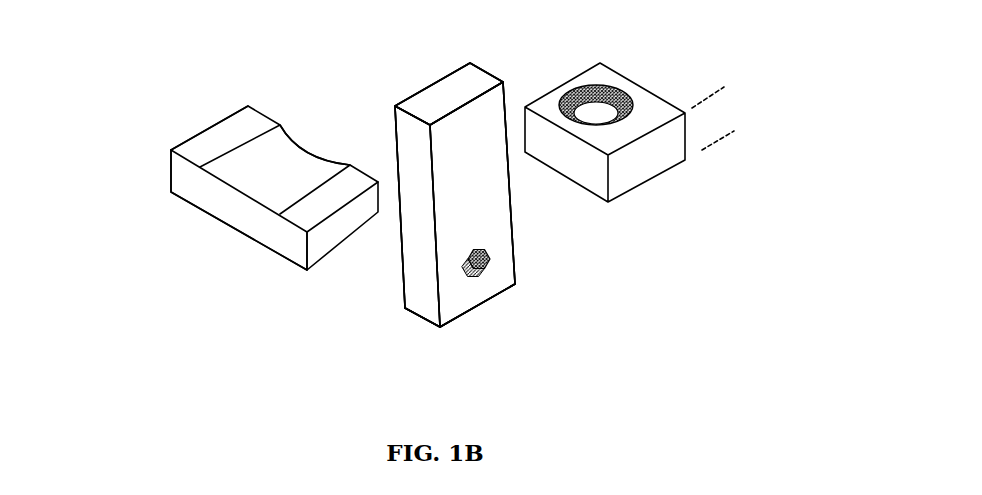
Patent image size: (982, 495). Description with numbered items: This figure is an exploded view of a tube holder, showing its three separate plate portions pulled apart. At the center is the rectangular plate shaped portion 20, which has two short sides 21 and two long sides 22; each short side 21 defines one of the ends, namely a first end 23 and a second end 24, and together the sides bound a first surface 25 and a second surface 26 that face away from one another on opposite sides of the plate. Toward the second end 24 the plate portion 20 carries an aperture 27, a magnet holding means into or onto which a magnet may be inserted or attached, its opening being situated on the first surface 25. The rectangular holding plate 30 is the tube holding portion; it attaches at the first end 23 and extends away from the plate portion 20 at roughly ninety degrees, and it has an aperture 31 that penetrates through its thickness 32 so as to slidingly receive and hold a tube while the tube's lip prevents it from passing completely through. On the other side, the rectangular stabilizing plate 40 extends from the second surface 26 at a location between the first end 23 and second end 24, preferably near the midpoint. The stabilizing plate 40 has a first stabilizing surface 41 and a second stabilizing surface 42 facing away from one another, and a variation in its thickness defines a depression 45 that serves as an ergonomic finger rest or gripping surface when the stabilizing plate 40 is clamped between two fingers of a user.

The rectangular plate shaped portion 20 is at (435, 67).
The short sides 21 is at (427, 88).
The long sides 22 is at (515, 252).
The first end 23 is at (470, 82).
The second end 24 is at (458, 315).
The first surface 25 is at (485, 203).
The second surface 26 is at (400, 253).
The aperture 27 is at (486, 268).
The rectangular holding plate 30 is at (677, 85).
The aperture 31 is at (583, 88).
The thickness 32 is at (713, 98).
The rectangular stabilizing plate 40 is at (148, 143).
The first stabilizing surface 41 is at (237, 127).
The second stabilizing surface 42 is at (182, 197).
The depression 45 is at (282, 165).